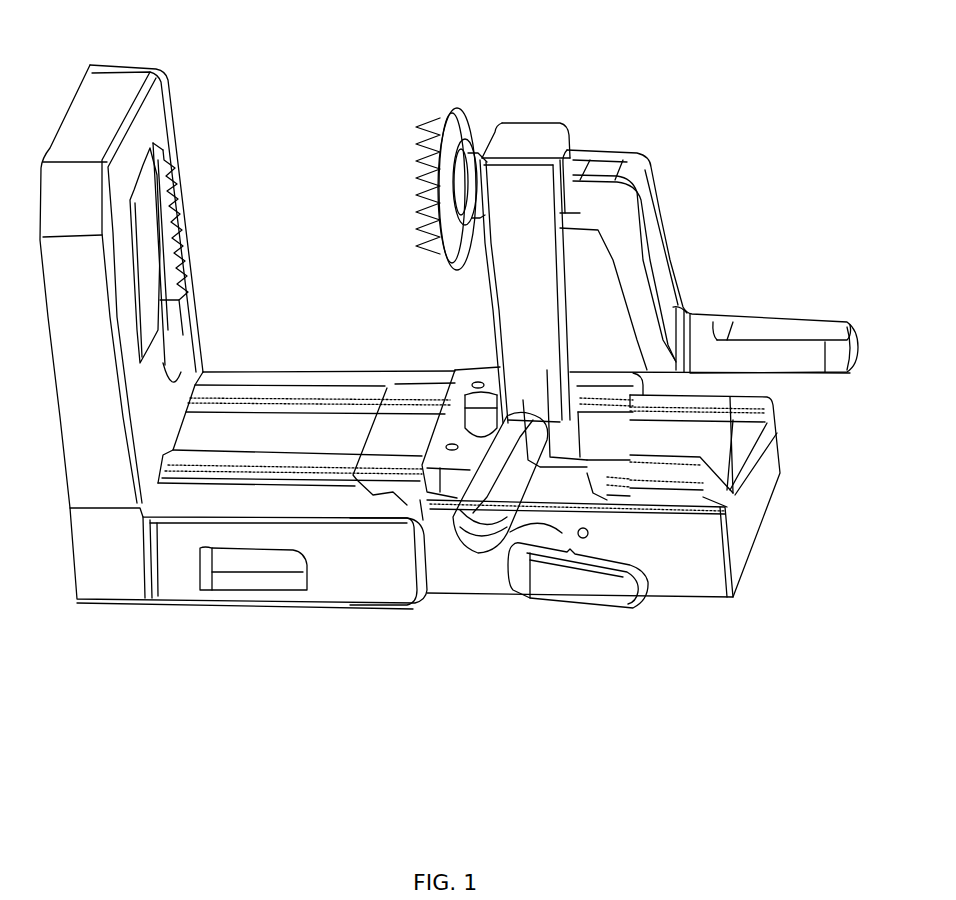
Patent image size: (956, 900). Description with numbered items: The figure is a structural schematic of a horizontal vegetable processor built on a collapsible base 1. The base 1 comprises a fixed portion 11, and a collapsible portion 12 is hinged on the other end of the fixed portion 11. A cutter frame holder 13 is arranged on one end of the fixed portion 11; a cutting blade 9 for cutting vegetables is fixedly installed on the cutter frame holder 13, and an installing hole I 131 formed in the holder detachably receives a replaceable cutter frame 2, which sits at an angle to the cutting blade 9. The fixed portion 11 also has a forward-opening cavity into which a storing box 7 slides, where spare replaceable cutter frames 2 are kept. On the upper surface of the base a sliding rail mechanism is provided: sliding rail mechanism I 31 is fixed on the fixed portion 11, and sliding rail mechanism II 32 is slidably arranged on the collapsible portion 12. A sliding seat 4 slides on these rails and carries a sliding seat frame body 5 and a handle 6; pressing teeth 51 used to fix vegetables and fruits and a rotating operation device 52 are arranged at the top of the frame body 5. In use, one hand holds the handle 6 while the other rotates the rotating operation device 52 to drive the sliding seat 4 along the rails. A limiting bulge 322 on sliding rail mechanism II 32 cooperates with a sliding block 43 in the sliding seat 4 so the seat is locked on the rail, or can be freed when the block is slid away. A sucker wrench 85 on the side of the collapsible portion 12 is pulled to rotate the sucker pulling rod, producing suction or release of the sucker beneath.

The collapsible base 1 is at (401, 627).
The fixed portion 11 is at (367, 578).
The collapsible portion 12 is at (453, 578).
The cutter frame holder 13 is at (170, 155).
The installing hole I 131 is at (182, 338).
The replaceable cutter frame 2 is at (173, 217).
The cutting blade 9 is at (146, 288).
The sliding rail mechanism I 31 is at (255, 378).
The sliding rail mechanism II 32 is at (735, 513).
The limiting bulge 322 is at (676, 428).
The sliding seat 4 is at (594, 458).
The sliding block 43 is at (475, 411).
The sliding seat frame body 5 is at (522, 187).
The pressing teeth 51 is at (448, 162).
The rotating operation device 52 is at (628, 228).
The handle 6 is at (483, 528).
The storing box 7 is at (235, 578).
The sucker wrench 85 is at (584, 590).